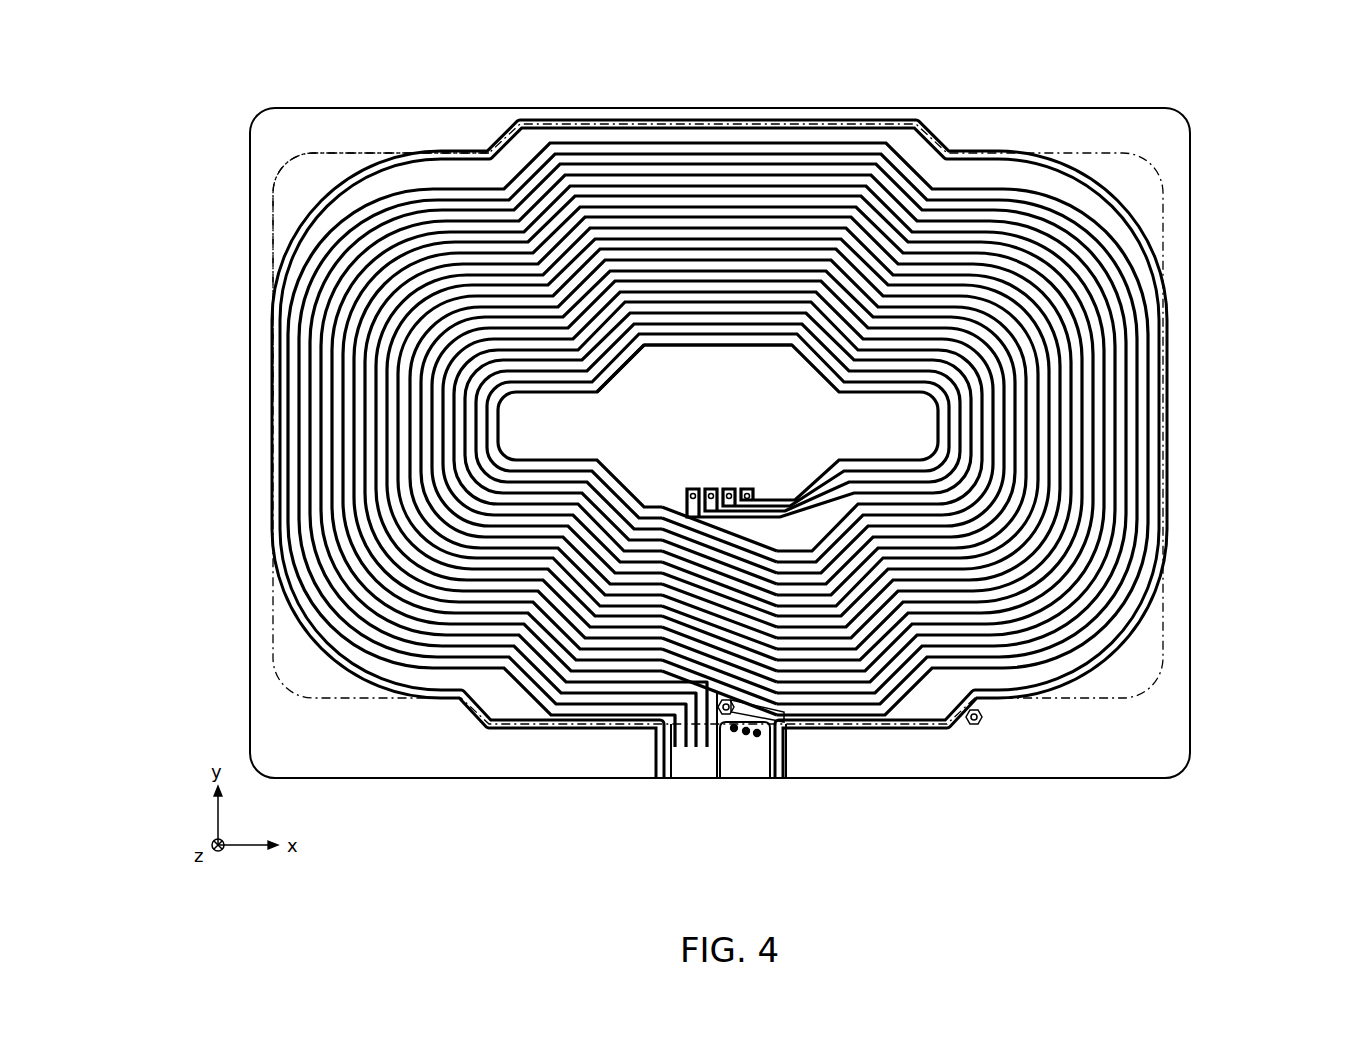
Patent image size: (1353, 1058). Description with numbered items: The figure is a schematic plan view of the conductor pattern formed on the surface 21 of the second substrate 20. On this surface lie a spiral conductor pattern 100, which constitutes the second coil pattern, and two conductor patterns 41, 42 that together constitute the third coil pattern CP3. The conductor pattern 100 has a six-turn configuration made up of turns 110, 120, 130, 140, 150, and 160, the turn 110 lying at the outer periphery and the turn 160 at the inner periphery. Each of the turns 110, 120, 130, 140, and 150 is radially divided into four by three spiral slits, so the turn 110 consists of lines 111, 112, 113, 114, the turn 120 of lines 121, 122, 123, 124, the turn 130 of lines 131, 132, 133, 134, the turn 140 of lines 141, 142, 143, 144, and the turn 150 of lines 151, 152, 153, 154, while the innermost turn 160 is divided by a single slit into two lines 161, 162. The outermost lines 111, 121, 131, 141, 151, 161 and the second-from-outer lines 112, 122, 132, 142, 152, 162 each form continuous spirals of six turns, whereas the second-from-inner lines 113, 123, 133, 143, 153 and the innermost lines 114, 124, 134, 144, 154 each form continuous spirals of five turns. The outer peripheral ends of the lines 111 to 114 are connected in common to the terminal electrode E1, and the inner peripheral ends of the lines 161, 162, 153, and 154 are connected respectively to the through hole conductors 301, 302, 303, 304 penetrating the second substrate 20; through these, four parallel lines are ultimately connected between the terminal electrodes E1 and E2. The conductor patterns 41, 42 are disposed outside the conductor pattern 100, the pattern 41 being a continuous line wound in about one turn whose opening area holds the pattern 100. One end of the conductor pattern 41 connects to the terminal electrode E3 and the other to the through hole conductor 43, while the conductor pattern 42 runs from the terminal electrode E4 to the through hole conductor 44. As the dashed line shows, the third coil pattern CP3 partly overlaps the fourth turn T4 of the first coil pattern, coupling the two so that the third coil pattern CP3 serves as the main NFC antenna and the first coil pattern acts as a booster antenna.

The second substrate 20 is at (1193, 160).
The surface of the second substrate 21 is at (1107, 127).
The conductor pattern 41 is at (440, 702).
The conductor pattern 42 is at (872, 728).
The through hole conductor 43 is at (718, 712).
The through hole conductor 44 is at (980, 724).
The conductor pattern 100 is at (719, 483).
The turn 110 is at (807, 429).
The line 111 is at (1150, 320).
The line 112 is at (1139, 340).
The line 113 is at (1128, 360).
The line 114 is at (1270, 285).
The turn 120 is at (829, 428).
The line 121 is at (1106, 458).
The line 122 is at (1095, 475).
The line 123 is at (1084, 492).
The line 124 is at (1073, 510).
The turn 130 is at (586, 443).
The line 131 is at (377, 556).
The line 132 is at (388, 540).
The line 133 is at (399, 523).
The line 134 is at (410, 507).
The turn 140 is at (563, 427).
The line 141 is at (421, 475).
The line 142 is at (432, 461).
The line 143 is at (443, 447).
The line 144 is at (454, 432).
The turn 150 is at (541, 407).
The line 151 is at (456, 415).
The line 152 is at (466, 404).
The line 153 is at (477, 393).
The line 154 is at (489, 382).
The turn 160 is at (698, 379).
The line 161 is at (677, 342).
The line 162 is at (657, 352).
The through hole conductor 301 is at (730, 489).
The through hole conductor 302 is at (750, 489).
The through hole conductor 303 is at (689, 489).
The through hole conductor 304 is at (709, 489).
The terminal electrode E1 is at (695, 765).
The terminal electrode E2 is at (745, 765).
The terminal electrode E3 is at (662, 780).
The terminal electrode E4 is at (782, 774).
The fourth turn of the first coil pattern T4 is at (345, 150).
The third coil pattern CP3 is at (345, 690).